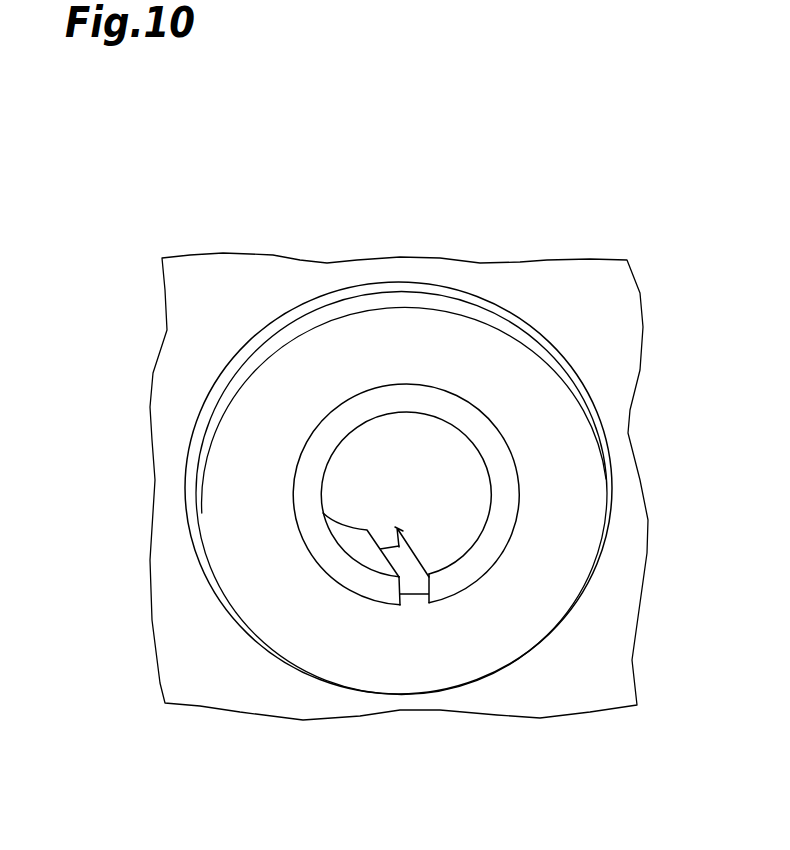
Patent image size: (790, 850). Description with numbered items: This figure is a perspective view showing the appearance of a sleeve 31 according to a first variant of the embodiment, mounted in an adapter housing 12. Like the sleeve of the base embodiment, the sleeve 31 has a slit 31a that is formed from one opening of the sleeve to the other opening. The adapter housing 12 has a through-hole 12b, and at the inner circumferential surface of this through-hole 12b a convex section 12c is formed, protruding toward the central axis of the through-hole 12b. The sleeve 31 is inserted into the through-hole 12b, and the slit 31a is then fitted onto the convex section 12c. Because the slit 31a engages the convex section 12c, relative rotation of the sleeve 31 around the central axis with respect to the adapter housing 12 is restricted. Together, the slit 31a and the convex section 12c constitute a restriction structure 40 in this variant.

The adapter housing 12 is at (590, 493).
The through-hole 12b is at (497, 560).
The convex section 12c is at (399, 565).
The sleeve 31 is at (464, 597).
The slit 31a is at (391, 553).
The restriction structure 40 is at (440, 190).